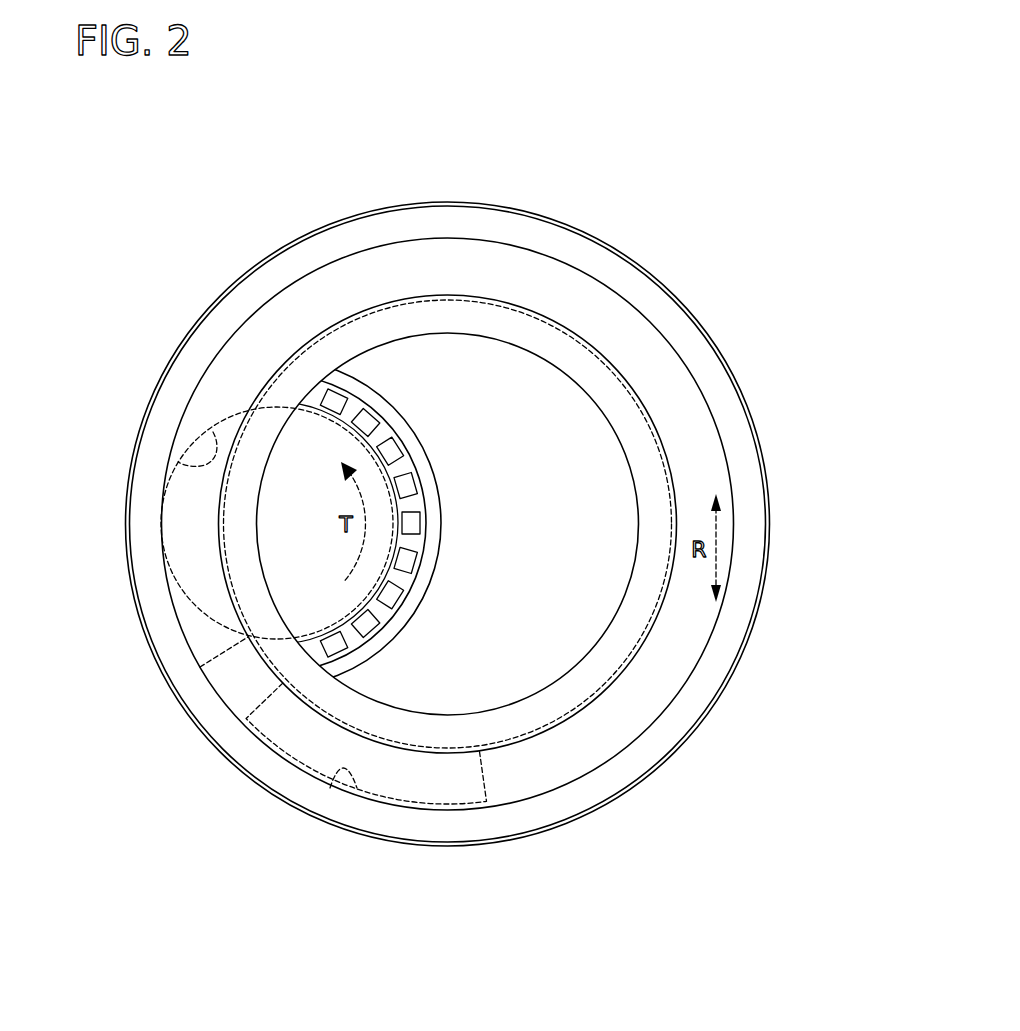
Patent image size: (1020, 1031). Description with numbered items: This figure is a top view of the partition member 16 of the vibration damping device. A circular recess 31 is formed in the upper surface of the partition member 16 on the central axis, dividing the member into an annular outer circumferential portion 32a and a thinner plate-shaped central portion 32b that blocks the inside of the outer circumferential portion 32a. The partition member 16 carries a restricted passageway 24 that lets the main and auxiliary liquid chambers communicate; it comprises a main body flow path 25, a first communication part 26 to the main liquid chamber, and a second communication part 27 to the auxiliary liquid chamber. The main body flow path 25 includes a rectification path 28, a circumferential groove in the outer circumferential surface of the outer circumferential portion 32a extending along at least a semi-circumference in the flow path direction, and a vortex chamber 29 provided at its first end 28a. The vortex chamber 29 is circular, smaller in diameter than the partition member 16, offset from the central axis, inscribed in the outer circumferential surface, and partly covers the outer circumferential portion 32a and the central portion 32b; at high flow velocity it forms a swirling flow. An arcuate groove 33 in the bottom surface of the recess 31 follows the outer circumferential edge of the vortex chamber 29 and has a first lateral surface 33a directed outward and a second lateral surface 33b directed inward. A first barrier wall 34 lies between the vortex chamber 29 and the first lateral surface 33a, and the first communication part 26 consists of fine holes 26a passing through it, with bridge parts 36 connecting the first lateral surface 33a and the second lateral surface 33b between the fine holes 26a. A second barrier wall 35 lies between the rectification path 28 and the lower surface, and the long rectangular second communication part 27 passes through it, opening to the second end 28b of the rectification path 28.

The partition member 16 is at (741, 159).
The restricted passageway 24 is at (591, 745).
The main body flow path 25 is at (668, 660).
The first communication part 26 is at (502, 932).
The fine holes 26a is at (372, 630).
The second communication part 27 is at (352, 790).
The rectification path 28 is at (700, 460).
The first end 28a is at (185, 505).
The second end 28b is at (293, 740).
The vortex chamber 29 is at (165, 458).
The recess 31 is at (516, 350).
The outer circumferential portion 32a is at (658, 363).
The central portion 32b is at (585, 447).
The groove 33 is at (370, 390).
The first lateral surface 33a is at (318, 395).
The second lateral surface 33b is at (390, 410).
The first barrier wall 34 is at (313, 655).
The second barrier wall 35 is at (620, 722).
The bridge parts 36 is at (413, 507).